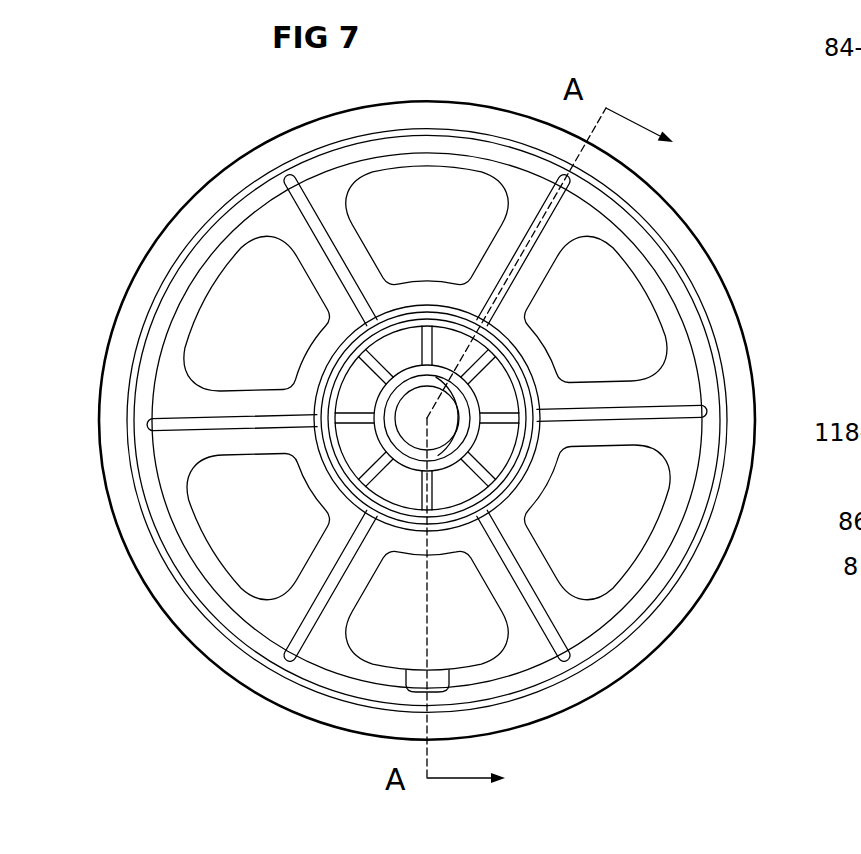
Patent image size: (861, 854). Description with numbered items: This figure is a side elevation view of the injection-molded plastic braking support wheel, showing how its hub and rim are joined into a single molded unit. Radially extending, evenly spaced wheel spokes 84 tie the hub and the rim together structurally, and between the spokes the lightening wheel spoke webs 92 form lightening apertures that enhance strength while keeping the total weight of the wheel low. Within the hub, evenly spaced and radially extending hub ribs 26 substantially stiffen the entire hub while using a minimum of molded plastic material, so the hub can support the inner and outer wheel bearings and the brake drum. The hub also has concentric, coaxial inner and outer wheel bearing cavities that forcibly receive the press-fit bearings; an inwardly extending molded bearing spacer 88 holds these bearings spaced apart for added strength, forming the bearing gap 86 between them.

The hub ribs 26 is at (335, 411).
The wheel spokes 84 is at (545, 223).
The bearing gap 86 is at (483, 497).
The bearing spacer 88 is at (848, 326).
The lightening wheel spoke webs 92 is at (493, 588).